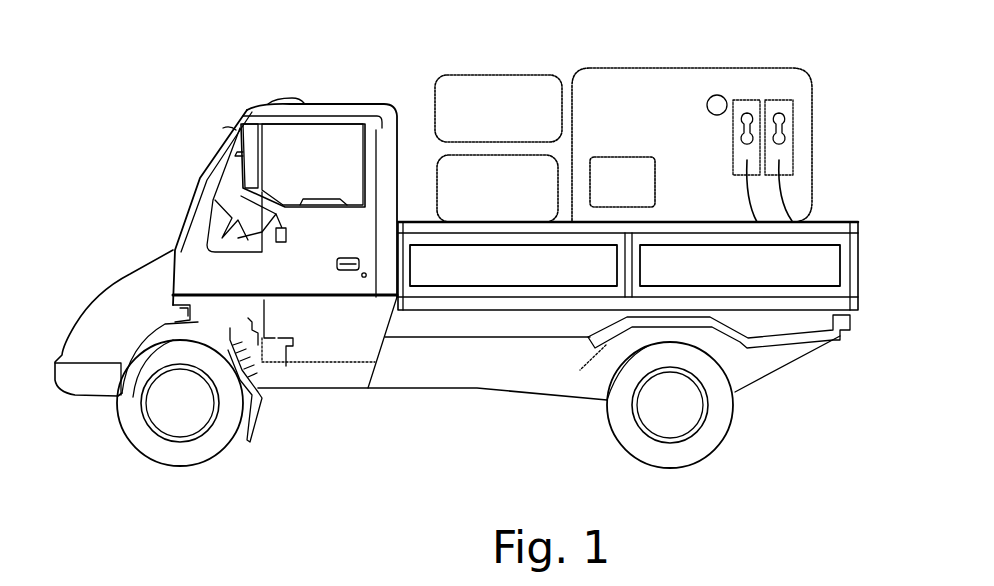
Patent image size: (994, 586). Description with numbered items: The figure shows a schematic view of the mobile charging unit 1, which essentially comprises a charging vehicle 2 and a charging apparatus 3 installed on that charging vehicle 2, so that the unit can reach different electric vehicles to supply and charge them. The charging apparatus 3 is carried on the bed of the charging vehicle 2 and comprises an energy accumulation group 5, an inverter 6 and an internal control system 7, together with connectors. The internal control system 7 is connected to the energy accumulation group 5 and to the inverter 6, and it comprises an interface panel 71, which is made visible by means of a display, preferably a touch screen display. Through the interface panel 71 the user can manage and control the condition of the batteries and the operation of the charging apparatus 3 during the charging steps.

The mobile charging unit 1 is at (588, 52).
The charging vehicle 2 is at (135, 296).
The charging apparatus 3 is at (768, 50).
The energy accumulation group 5 is at (490, 205).
The inverter 6 is at (490, 100).
The internal control system 7 is at (807, 120).
The interface panel 71 is at (634, 192).